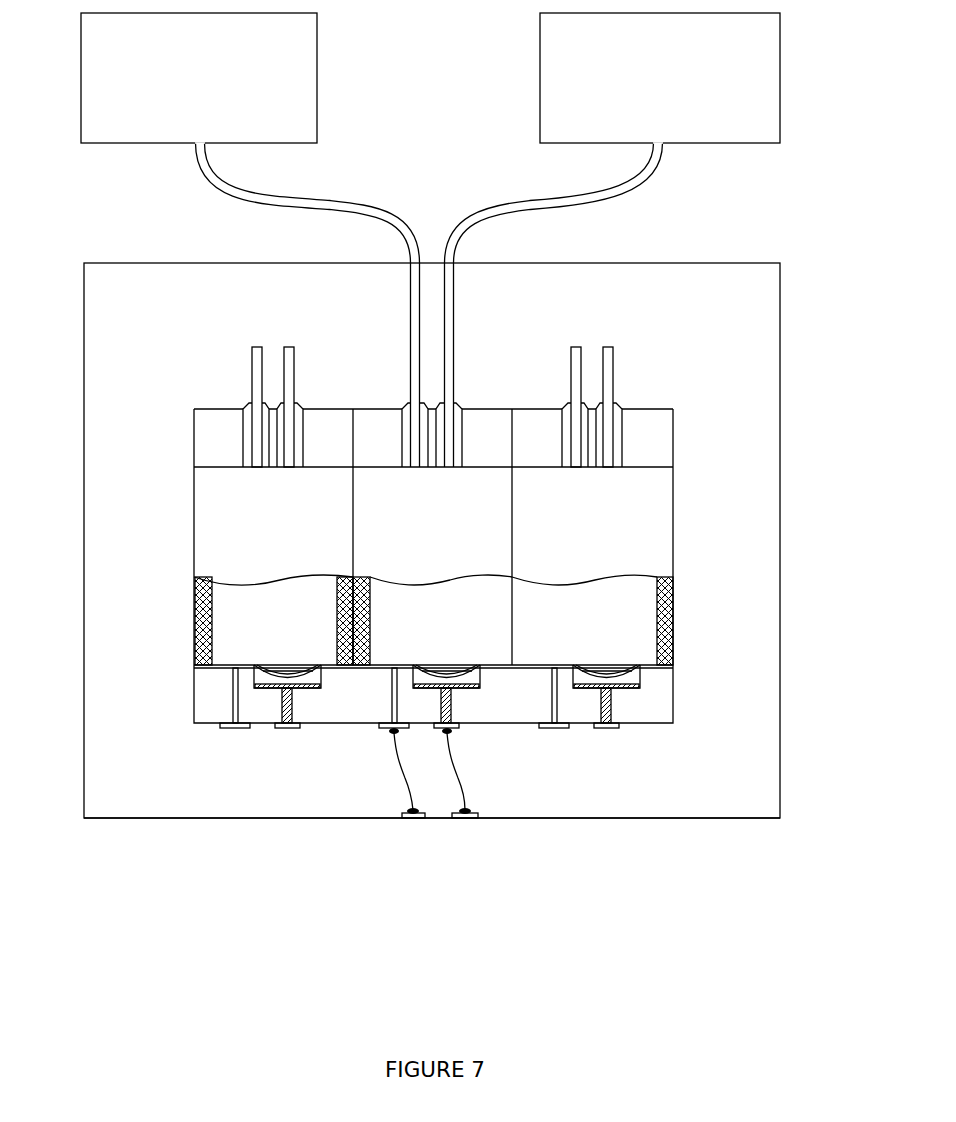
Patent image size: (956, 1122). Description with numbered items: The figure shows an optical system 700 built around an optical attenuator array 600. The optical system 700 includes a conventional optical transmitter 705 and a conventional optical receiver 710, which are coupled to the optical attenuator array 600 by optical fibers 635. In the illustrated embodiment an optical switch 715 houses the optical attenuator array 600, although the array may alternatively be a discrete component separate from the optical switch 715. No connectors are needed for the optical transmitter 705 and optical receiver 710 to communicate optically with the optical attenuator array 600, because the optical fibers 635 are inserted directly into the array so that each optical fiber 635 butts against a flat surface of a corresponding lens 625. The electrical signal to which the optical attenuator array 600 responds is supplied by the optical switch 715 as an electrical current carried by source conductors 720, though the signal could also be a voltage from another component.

The optical system 700 is at (124, 916).
The optical transmitter 705 is at (318, 80).
The optical receiver 710 is at (540, 80).
The optical fibers 635 is at (472, 207).
The lens 625 is at (416, 521).
The optical attenuator array 600 is at (716, 778).
The optical switch 715 is at (250, 818).
The source conductors 720 is at (413, 783).